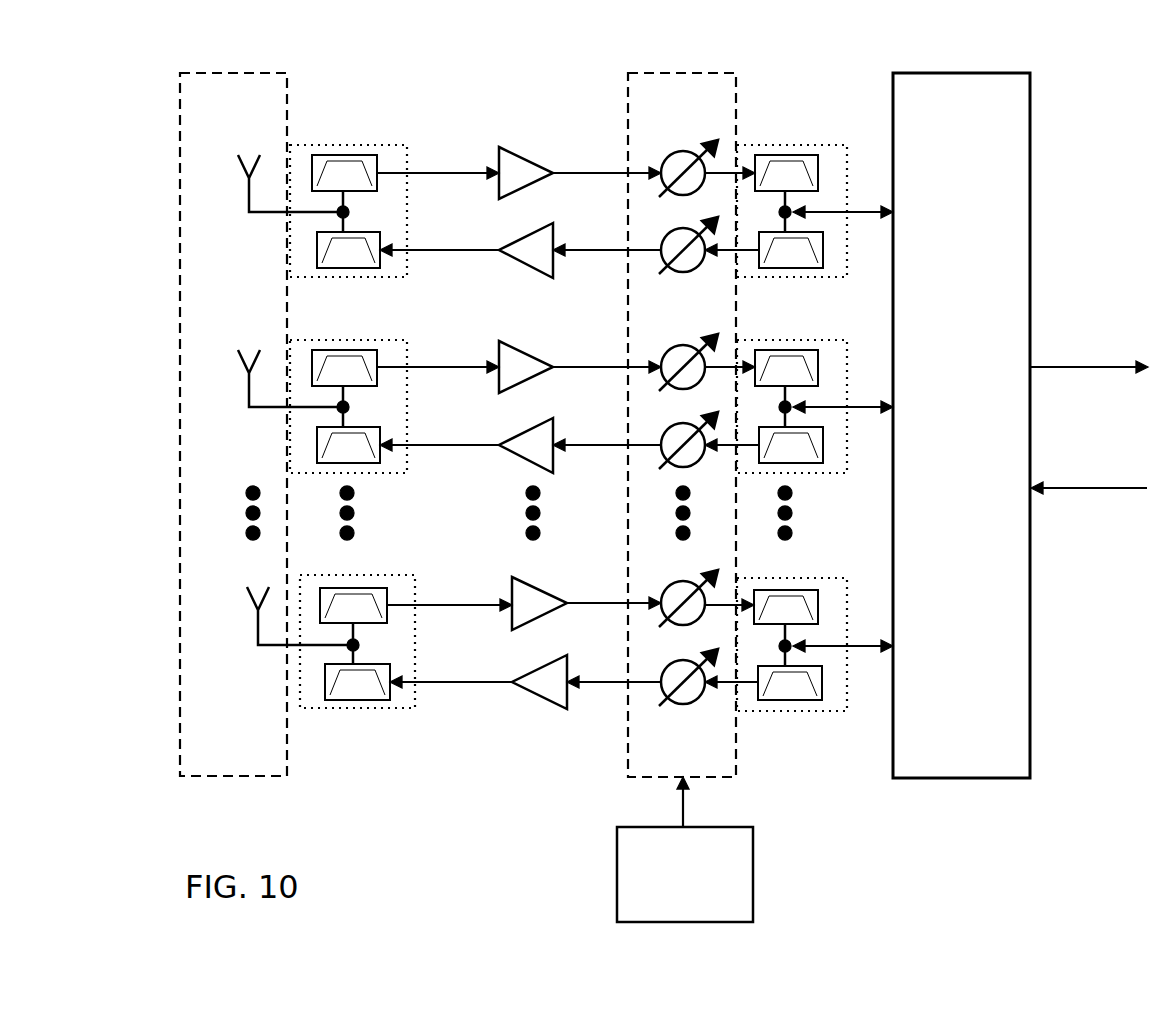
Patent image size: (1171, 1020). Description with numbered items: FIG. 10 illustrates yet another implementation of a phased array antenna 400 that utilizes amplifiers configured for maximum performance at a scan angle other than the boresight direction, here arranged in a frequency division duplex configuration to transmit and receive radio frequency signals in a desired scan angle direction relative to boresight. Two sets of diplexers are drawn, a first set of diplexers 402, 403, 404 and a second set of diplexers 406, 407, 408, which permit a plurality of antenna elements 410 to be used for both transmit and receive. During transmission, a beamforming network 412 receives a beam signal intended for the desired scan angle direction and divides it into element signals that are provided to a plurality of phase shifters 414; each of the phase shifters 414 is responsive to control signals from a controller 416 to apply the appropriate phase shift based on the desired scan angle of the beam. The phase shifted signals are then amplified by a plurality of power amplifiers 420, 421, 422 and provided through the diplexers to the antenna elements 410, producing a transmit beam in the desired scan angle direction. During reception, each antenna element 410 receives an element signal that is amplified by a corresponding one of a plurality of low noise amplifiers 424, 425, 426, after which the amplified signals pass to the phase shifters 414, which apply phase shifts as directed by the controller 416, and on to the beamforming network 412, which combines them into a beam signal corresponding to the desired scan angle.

The phased array antenna 400 is at (1055, 35).
The diplexer 402 is at (795, 145).
The diplexer 403 is at (795, 340).
The diplexer 404 is at (807, 578).
The diplexer 406 is at (372, 145).
The diplexer 407 is at (366, 340).
The diplexer 408 is at (378, 575).
The antenna elements 410 is at (262, 73).
The beamforming network 412 is at (1030, 162).
The phase shifters 414 is at (708, 73).
The controller 416 is at (633, 827).
The power amplifier 420 is at (536, 226).
The power amplifier 421 is at (536, 421).
The power amplifier 422 is at (548, 661).
The low noise amplifier 424 is at (527, 157).
The low noise amplifier 425 is at (528, 352).
The low noise amplifier 426 is at (538, 587).